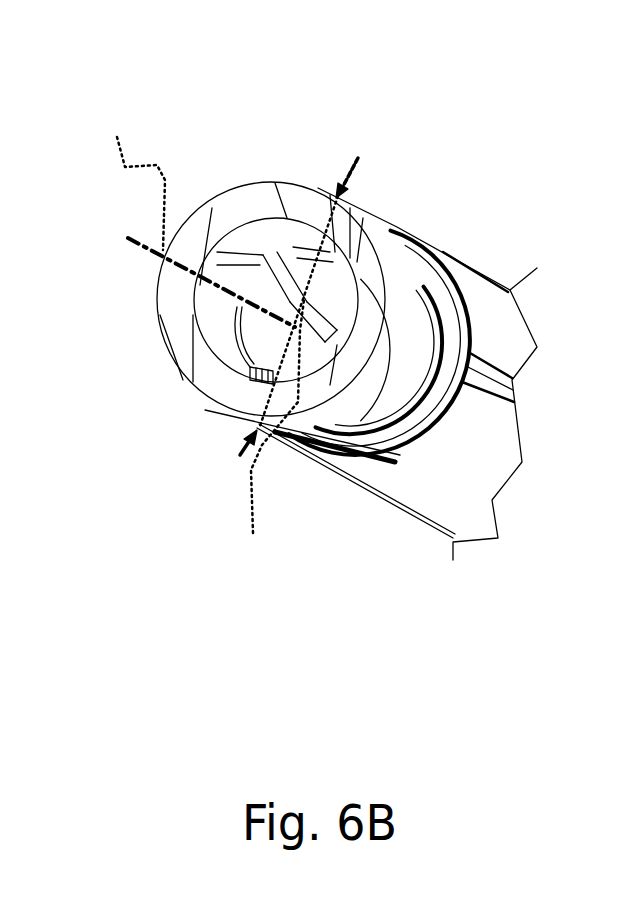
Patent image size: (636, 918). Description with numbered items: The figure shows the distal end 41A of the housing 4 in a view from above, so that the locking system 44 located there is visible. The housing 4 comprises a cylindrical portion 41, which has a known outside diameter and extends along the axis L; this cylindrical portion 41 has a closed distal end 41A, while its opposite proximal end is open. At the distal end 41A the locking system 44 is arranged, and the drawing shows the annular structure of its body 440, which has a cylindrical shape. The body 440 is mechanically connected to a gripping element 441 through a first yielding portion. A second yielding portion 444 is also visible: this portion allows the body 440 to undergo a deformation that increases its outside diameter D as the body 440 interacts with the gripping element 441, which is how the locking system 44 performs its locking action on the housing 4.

The housing 4 is at (321, 399).
The cylindrical portion 41 is at (371, 457).
The distal end 41A is at (302, 500).
The locking system 44 is at (321, 261).
The body 440 is at (230, 225).
The gripping element 441 is at (320, 293).
The second yielding portion 444 is at (398, 324).